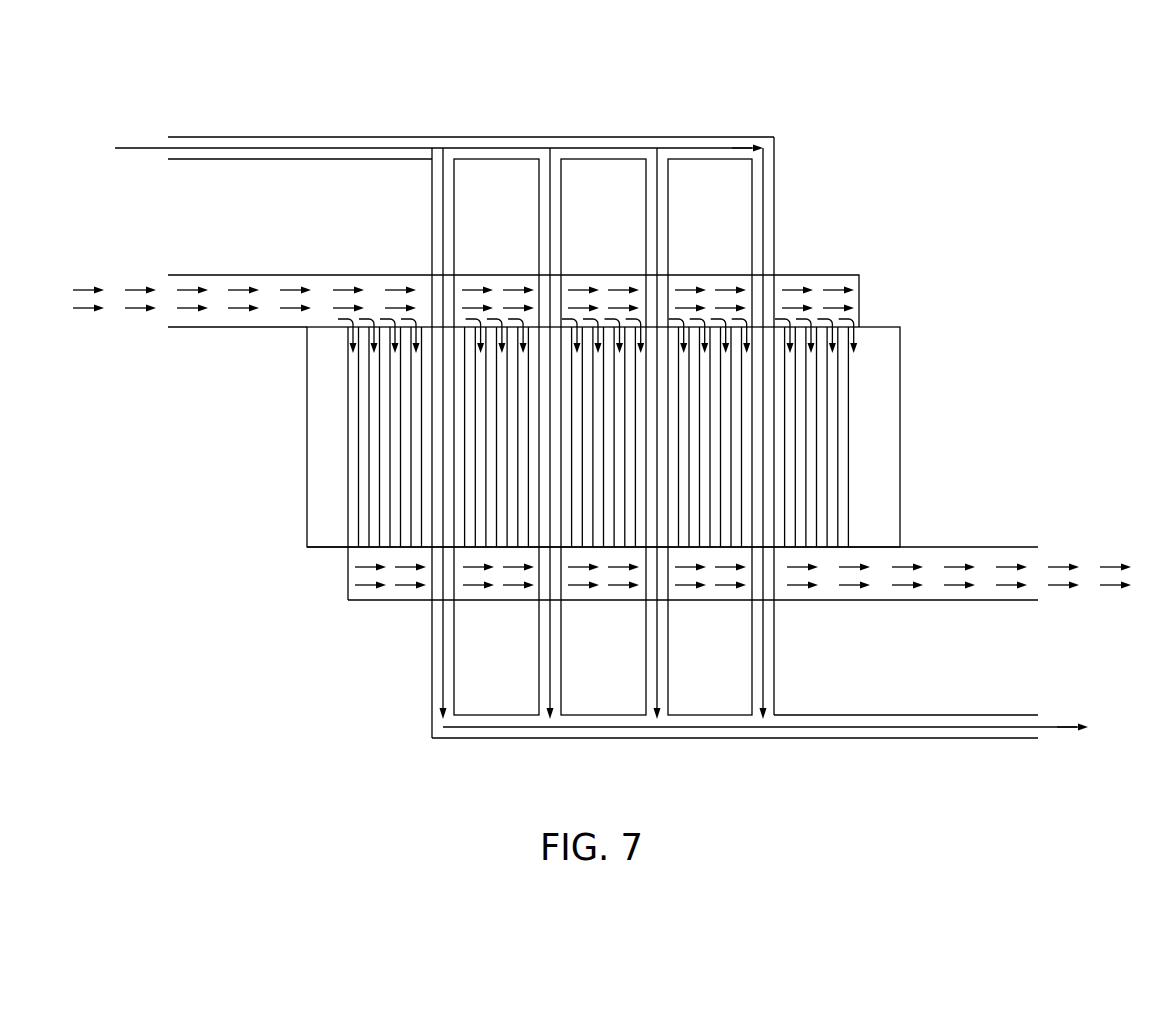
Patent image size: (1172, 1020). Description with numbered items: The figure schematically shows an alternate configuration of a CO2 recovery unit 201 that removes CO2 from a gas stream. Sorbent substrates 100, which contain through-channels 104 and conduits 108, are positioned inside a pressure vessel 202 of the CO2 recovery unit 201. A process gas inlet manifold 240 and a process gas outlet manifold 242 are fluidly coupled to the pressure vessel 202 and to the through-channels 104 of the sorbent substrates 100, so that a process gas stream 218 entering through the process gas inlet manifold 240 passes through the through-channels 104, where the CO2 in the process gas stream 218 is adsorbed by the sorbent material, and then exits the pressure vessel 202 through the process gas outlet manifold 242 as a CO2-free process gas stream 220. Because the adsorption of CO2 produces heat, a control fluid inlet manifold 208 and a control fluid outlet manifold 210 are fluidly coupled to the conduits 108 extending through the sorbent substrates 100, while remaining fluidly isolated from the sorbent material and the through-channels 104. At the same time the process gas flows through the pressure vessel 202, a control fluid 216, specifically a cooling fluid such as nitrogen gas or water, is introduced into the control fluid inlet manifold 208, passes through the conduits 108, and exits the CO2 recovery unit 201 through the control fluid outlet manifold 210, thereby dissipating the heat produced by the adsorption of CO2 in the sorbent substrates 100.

The sorbent substrate 100 is at (867, 415).
The through-channels 104 is at (352, 422).
The conduits 108 is at (800, 647).
The CO2 recovery unit 201 is at (601, 443).
The pressure vessel 202 is at (887, 327).
The control fluid inlet manifold 208 is at (312, 137).
The control fluid outlet manifold 210 is at (878, 738).
The control fluid 216 is at (137, 138).
The process gas stream 218 is at (122, 272).
The CO2-free process gas stream 220 is at (1087, 593).
The process gas inlet manifold 240 is at (270, 275).
The process gas outlet manifold 242 is at (370, 600).